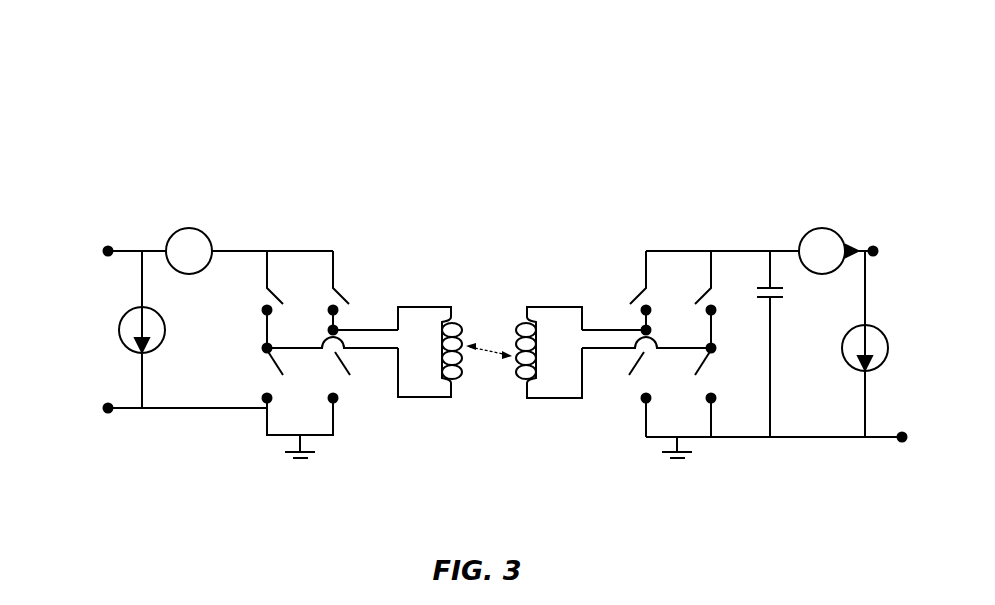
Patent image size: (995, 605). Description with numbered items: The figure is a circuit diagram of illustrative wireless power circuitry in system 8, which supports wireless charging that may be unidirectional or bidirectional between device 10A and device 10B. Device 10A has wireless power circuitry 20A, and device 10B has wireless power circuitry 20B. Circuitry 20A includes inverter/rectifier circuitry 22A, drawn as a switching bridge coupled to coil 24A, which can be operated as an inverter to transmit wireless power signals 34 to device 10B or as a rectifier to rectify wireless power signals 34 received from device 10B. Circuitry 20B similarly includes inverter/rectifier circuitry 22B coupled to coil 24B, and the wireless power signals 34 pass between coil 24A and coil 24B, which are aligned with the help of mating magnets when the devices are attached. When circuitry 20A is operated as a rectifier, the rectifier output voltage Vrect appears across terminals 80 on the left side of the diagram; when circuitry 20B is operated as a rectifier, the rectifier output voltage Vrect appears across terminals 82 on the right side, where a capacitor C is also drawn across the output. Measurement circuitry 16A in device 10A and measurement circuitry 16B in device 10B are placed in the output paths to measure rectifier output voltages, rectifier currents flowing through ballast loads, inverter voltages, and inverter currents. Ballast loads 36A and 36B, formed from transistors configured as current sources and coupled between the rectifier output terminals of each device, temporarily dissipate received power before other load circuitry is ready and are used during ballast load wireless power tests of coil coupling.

The system 8 is at (843, 62).
The device 10A is at (452, 122).
The device 10B is at (475, 122).
The measurement circuitry 16A is at (188, 228).
The measurement circuitry 16B is at (822, 228).
The wireless power circuitry 20A is at (222, 212).
The wireless power circuitry 20B is at (475, 212).
The inverter/rectifier circuitry 22A is at (264, 476).
The inverter/rectifier circuitry 22B is at (746, 476).
The coil 24A is at (452, 384).
The coil 24B is at (525, 384).
The wireless power signals 34 is at (488, 349).
The ballast load 36A is at (166, 330).
The ballast load 36B is at (845, 364).
The terminals 80 is at (106, 407).
The terminals 82 is at (876, 252).
The capacitor C is at (759, 344).